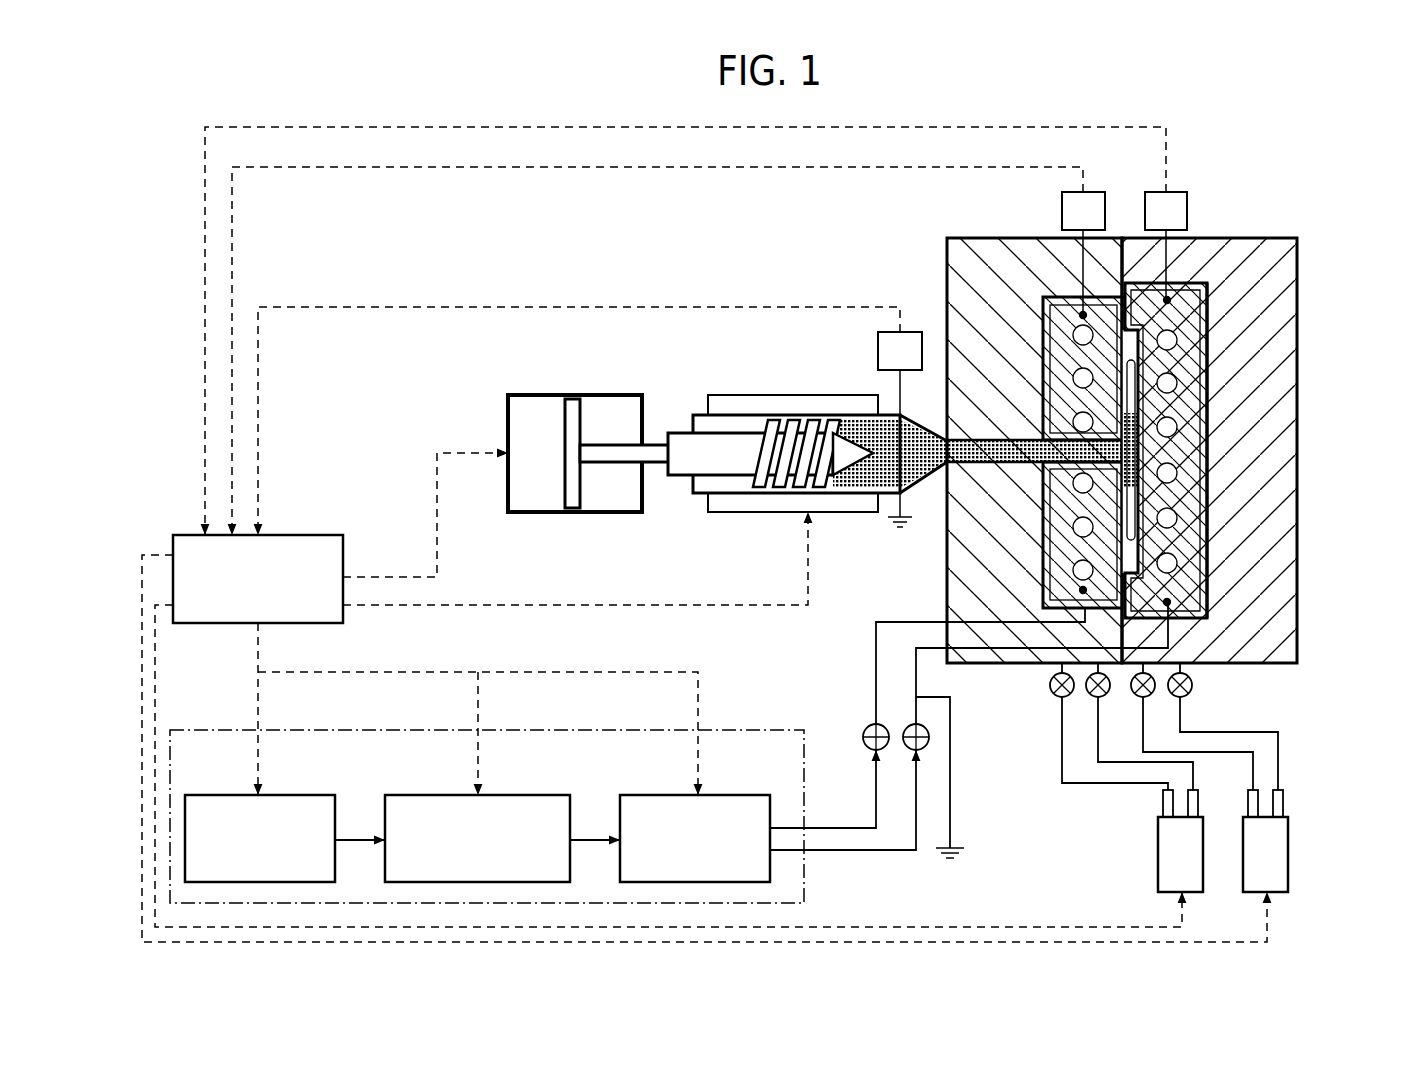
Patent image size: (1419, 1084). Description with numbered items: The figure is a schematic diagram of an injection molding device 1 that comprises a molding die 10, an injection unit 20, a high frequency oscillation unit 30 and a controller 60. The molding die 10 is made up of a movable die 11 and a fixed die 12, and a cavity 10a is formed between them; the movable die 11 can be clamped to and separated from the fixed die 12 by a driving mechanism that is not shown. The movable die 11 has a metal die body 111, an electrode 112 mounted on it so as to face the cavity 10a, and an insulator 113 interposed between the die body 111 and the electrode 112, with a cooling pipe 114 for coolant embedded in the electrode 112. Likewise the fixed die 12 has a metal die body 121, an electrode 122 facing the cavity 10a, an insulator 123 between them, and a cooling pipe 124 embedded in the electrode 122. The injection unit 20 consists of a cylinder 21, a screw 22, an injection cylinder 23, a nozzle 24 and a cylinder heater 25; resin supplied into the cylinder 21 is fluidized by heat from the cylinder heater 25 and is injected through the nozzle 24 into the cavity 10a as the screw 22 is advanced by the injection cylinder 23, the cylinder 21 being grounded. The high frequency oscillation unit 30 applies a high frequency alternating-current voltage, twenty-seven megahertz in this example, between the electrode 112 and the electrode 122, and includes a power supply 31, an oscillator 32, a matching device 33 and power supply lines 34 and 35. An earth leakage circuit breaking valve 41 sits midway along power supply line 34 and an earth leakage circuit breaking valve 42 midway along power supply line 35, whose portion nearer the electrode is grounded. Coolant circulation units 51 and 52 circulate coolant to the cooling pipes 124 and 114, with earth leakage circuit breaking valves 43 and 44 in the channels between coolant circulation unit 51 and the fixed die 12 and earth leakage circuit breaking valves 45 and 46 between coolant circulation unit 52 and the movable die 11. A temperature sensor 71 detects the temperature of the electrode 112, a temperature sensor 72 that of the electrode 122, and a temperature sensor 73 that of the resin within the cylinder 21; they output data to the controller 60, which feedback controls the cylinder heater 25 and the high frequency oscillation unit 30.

The injection molding device 1 is at (1297, 108).
The molding die 10 is at (1263, 210).
The cavity 10a is at (1140, 535).
The movable die 11 is at (1261, 446).
The die body 111 is at (1253, 340).
The electrode 112 is at (1200, 300).
The insulator 113 is at (1207, 390).
The cooling pipe 114 is at (1178, 425).
The fixed die 12 is at (979, 443).
The die body 121 is at (985, 262).
The electrode 122 is at (1045, 498).
The insulator 123 is at (1073, 537).
The cooling pipe 124 is at (1140, 550).
The injection unit 20 is at (503, 375).
The cylinder 21 is at (698, 415).
The screw 22 is at (755, 452).
The injection cylinder 23 is at (530, 395).
The nozzle 24 is at (947, 450).
The cylinder heater 25 is at (740, 512).
The high frequency oscillation unit 30 is at (720, 727).
The power supply 31 is at (285, 795).
The oscillator 32 is at (520, 795).
The matching device 33 is at (720, 795).
The power supply line 34 is at (848, 827).
The power supply line 35 is at (848, 852).
The earth leakage circuit breaking valve 41 is at (866, 727).
The earth leakage circuit breaking valve 42 is at (910, 726).
The earth leakage circuit breaking valve 43 is at (1050, 685).
The earth leakage circuit breaking valve 44 is at (1093, 698).
The earth leakage circuit breaking valve 45 is at (1193, 685).
The earth leakage circuit breaking valve 46 is at (1148, 698).
The coolant circulation unit 51 is at (1158, 845).
The coolant circulation unit 52 is at (1288, 845).
The controller 60 is at (290, 535).
The temperature sensor 71 is at (1175, 192).
The temperature sensor 72 is at (1062, 205).
The temperature sensor 73 is at (878, 350).